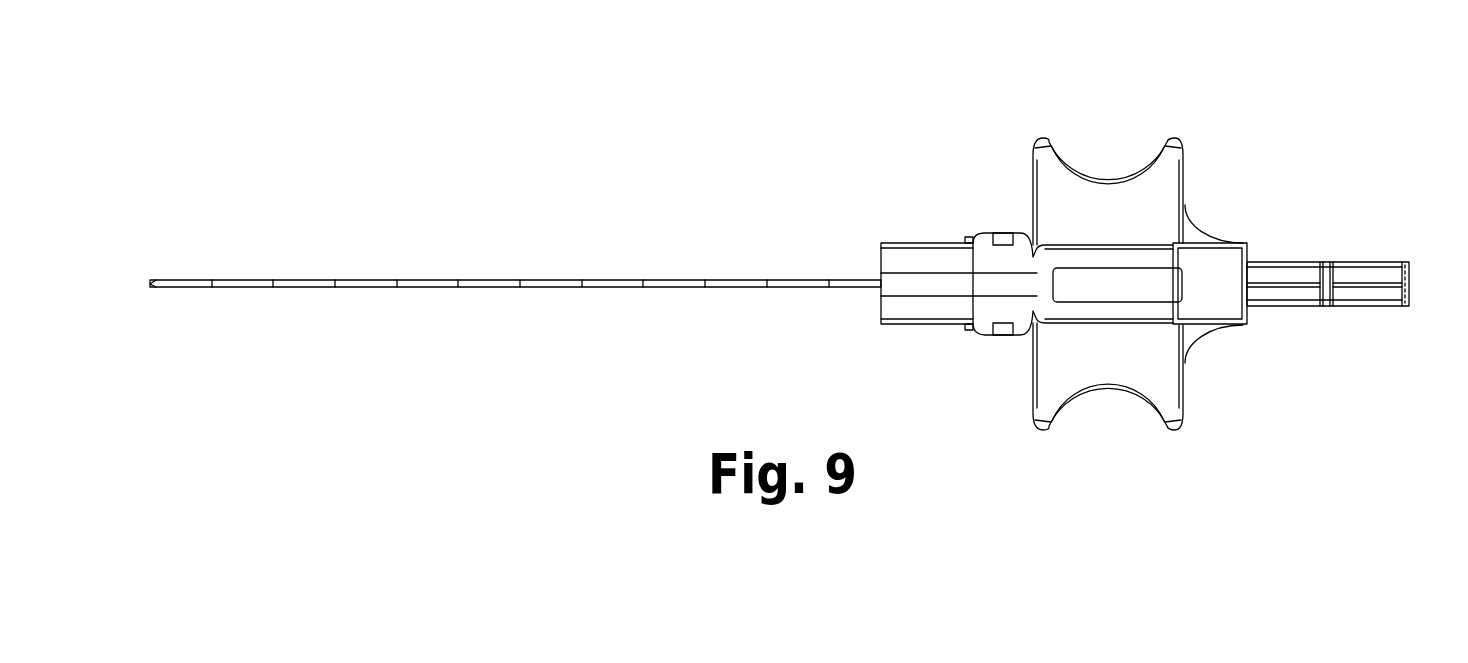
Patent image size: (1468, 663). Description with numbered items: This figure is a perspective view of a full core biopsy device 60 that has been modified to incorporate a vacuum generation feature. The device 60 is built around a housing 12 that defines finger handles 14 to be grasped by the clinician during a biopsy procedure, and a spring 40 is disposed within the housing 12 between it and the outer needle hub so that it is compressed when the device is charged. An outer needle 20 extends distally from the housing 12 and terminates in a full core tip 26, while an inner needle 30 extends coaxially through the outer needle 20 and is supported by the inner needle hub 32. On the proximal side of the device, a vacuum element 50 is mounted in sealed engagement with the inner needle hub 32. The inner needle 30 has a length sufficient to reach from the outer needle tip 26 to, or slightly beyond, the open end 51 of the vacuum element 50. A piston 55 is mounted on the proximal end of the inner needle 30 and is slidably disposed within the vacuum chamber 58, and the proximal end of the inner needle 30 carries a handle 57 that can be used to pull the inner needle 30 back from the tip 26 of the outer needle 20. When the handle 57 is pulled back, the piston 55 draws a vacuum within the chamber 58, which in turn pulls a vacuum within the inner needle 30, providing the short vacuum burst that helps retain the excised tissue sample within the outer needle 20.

The biopsy device 60 is at (802, 103).
The outer needle 20 is at (413, 280).
The full core tip 26 is at (153, 282).
The housing 12 is at (1191, 232).
The finger handles 14 is at (1178, 172).
The spring 40 is at (1197, 377).
The inner needle hub 32 is at (1246, 326).
The vacuum element 50 is at (1352, 264).
The vacuum chamber 58 is at (1278, 273).
The inner needle 30 is at (1290, 286).
The piston 55 is at (1326, 268).
The handle 57 is at (1386, 285).
The open end 51 is at (1406, 262).